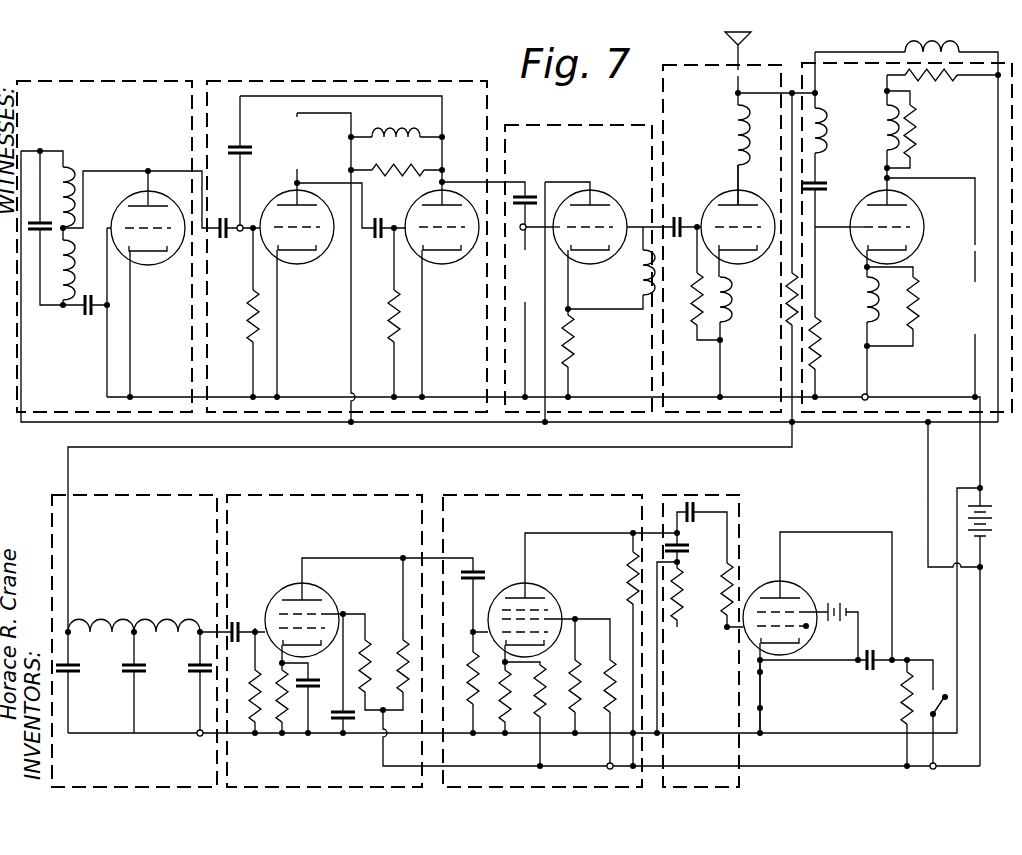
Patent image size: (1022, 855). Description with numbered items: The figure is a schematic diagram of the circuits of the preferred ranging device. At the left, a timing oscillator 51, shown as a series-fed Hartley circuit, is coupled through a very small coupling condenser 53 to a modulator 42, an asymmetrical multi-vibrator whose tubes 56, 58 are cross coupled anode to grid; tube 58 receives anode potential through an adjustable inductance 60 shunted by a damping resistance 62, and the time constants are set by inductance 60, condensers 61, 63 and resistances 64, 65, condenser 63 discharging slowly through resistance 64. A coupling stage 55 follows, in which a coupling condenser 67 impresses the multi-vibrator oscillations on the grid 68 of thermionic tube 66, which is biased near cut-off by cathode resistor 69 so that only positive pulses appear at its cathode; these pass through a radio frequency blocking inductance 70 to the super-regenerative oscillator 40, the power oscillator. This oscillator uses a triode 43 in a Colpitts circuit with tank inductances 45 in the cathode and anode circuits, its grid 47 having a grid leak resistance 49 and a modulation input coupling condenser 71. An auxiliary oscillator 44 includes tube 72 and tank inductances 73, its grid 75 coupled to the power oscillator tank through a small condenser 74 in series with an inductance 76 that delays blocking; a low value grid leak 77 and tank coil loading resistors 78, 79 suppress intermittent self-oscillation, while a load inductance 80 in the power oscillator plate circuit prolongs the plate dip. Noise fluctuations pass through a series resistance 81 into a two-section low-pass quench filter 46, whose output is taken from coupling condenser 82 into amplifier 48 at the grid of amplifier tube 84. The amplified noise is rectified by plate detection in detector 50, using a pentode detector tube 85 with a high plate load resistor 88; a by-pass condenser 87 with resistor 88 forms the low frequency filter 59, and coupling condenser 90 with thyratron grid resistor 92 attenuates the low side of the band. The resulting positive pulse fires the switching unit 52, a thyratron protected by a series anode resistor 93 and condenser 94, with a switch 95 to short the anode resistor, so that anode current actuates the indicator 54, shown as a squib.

The timing oscillator 51 is at (192, 118).
The condenser 61 is at (240, 140).
The tube 56 is at (278, 176).
The inductance 60 is at (418, 112).
The resistance 62 is at (418, 152).
The modulator 42 is at (484, 118).
The tube 58 is at (404, 212).
The coupling condenser 53 is at (226, 238).
The condenser 63 is at (379, 238).
The resistance 65 is at (256, 296).
The resistance 64 is at (397, 326).
The coupling stage 55 is at (508, 158).
The coupling condenser 67 is at (528, 188).
The thermionic tube 66 is at (612, 192).
The grid 68 is at (630, 216).
The cathode resistor 69 is at (572, 342).
The radio frequency blocking inductance 70 is at (641, 286).
The super-regenerative oscillator 40 is at (667, 108).
The tank inductances 45 is at (735, 132).
The modulation input coupling condenser 71 is at (678, 212).
The grid 47 is at (722, 178).
The triode 43 is at (758, 196).
The grid leak resistance 49 is at (700, 318).
The resistance 81 is at (792, 310).
The load inductance 80 is at (950, 42).
The auxiliary oscillator 44 is at (855, 66).
The inductance 76 is at (826, 126).
The tank coil loading resistor 78 is at (916, 132).
The tank inductances 73 is at (885, 150).
The condenser 74 is at (826, 190).
The tube 72 is at (920, 206).
The grid 75 is at (915, 218).
The grid leak 77 is at (816, 332).
The tank coil loading resistor 79 is at (915, 300).
The low-pass quench filter 46 is at (216, 562).
The amplifier 48 is at (229, 566).
The coupling condenser 82 is at (256, 604).
The amplifier tube 84 is at (334, 604).
The detector 50 is at (448, 541).
The plate load resistor 88 is at (633, 570).
The detector tube 85 is at (562, 606).
The by-pass condenser 87 is at (684, 549).
The coupling condenser 90 is at (696, 512).
The thyratron grid resistor 92 is at (727, 573).
The low frequency filter 59 is at (668, 681).
The switching unit 52 is at (812, 586).
The indicator 54 is at (760, 690).
The condenser 94 is at (868, 666).
The series anode resistor 93 is at (907, 696).
The switch 95 is at (940, 690).